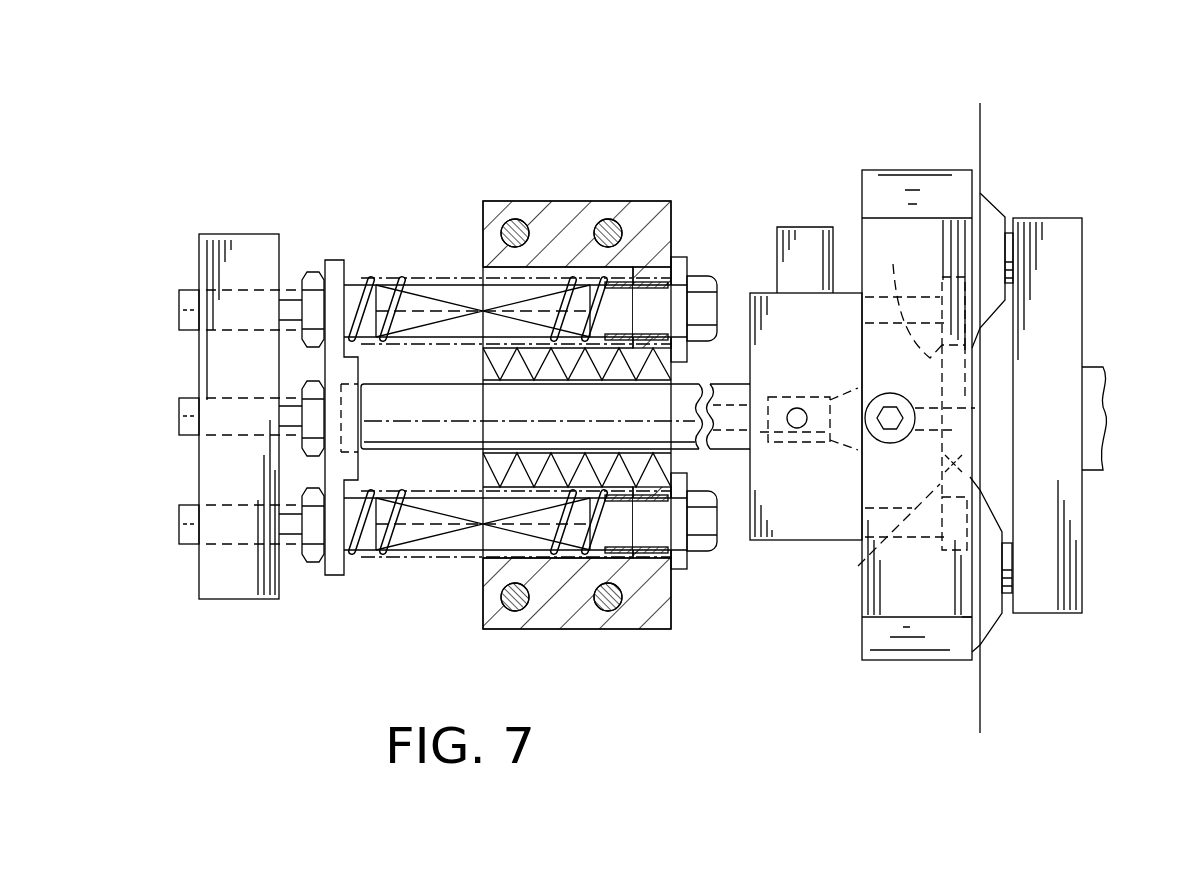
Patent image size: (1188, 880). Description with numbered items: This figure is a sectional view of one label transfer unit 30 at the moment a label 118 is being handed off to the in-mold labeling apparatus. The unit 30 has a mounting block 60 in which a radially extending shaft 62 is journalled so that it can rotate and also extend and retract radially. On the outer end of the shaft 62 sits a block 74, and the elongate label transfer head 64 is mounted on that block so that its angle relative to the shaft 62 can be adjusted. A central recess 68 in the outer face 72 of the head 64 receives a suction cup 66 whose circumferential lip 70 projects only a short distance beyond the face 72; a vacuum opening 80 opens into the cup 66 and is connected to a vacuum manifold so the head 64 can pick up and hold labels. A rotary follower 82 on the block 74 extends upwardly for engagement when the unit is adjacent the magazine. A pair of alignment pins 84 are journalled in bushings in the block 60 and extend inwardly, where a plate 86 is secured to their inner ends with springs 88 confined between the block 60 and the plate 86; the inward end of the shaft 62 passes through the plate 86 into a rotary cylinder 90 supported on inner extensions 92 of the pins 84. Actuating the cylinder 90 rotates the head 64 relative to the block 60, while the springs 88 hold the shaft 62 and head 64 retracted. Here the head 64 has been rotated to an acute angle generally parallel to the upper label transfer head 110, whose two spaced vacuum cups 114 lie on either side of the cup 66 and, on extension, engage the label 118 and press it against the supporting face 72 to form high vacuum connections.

The label transfer unit 30 is at (371, 128).
The mounting block 60 is at (560, 200).
The shaft 62 is at (680, 394).
The label transfer head 64 is at (917, 170).
The suction cup 66 is at (858, 566).
The central recess 68 is at (911, 295).
The circumferential lip 70 is at (914, 567).
The outer face 72 is at (979, 646).
The block 74 is at (775, 543).
The vacuum opening 80 is at (922, 433).
The rotary follower 82 is at (804, 227).
The alignment pins 84 is at (647, 298).
The plate 86 is at (337, 258).
The springs 88 is at (392, 272).
The rotary cylinder 90 is at (223, 600).
The inner extensions 92 is at (179, 312).
The upper label transfer head 110 is at (1083, 243).
The vacuum cups 114 is at (990, 198).
The label 118 is at (982, 128).